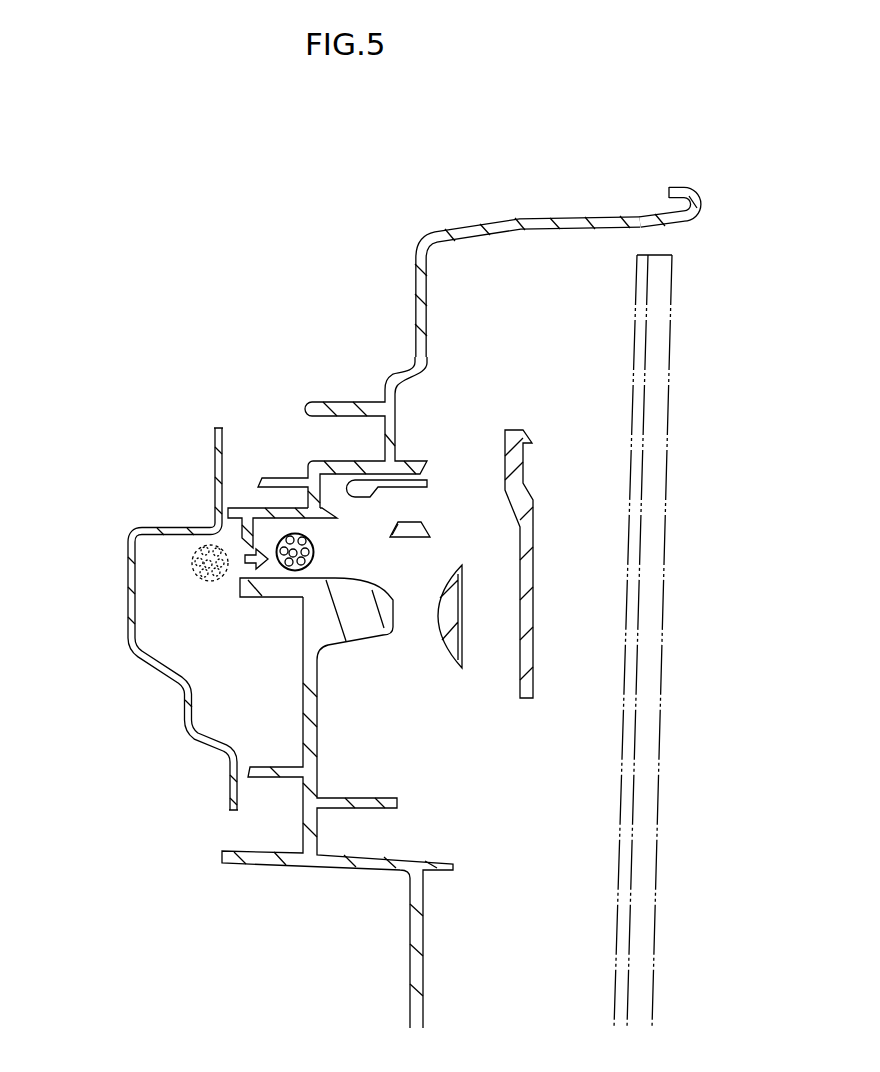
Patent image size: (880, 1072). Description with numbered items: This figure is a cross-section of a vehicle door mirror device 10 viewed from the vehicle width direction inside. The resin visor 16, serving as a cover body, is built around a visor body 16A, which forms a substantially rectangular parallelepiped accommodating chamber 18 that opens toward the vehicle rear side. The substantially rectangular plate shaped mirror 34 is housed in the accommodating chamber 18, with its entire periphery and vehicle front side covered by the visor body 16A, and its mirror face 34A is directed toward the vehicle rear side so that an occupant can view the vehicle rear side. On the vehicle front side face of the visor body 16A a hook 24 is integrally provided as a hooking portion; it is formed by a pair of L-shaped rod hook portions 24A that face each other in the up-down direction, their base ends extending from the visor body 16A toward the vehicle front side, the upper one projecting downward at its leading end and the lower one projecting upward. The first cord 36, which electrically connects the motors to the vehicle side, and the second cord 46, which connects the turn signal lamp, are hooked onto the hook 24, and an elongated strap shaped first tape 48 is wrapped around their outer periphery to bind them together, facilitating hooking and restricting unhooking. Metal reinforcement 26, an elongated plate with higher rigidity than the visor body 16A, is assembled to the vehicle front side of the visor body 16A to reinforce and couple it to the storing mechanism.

The vehicle structure 10 is at (141, 191).
The visor 16 is at (575, 251).
The visor body 16A is at (567, 207).
The accommodating chamber 18 is at (682, 229).
The hook 24 is at (232, 508).
The hook portions 24A is at (254, 510).
The reinforcement 26 is at (127, 590).
The mirror 34 is at (672, 428).
The mirror face 34A is at (633, 781).
The first cord 36 is at (215, 523).
The second cord 46 is at (310, 558).
The first tape 48 is at (314, 548).